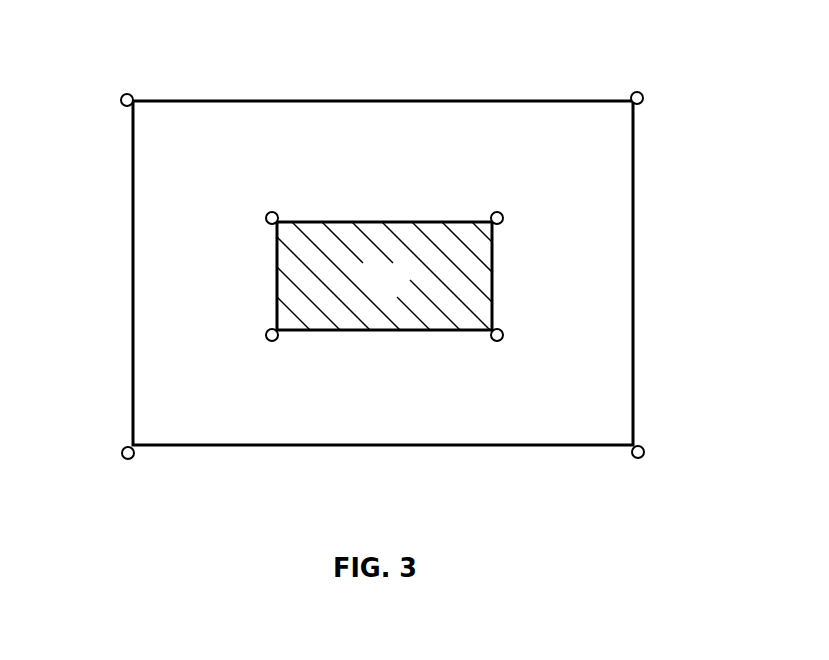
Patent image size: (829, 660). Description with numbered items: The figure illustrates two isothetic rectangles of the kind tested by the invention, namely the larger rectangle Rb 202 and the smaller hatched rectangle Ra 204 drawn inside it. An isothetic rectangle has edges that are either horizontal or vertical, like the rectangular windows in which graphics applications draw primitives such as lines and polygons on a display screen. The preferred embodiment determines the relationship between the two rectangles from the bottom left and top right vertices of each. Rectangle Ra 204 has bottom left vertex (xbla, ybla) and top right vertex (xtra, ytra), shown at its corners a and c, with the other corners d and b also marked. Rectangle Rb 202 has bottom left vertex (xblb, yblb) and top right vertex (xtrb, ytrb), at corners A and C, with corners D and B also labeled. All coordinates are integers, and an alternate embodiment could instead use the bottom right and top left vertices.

The rectangle Rb 202 is at (383, 274).
The rectangle Ra 204 is at (392, 276).
The rectangle Ra is at (492, 282).
The rectangle Rb is at (397, 446).